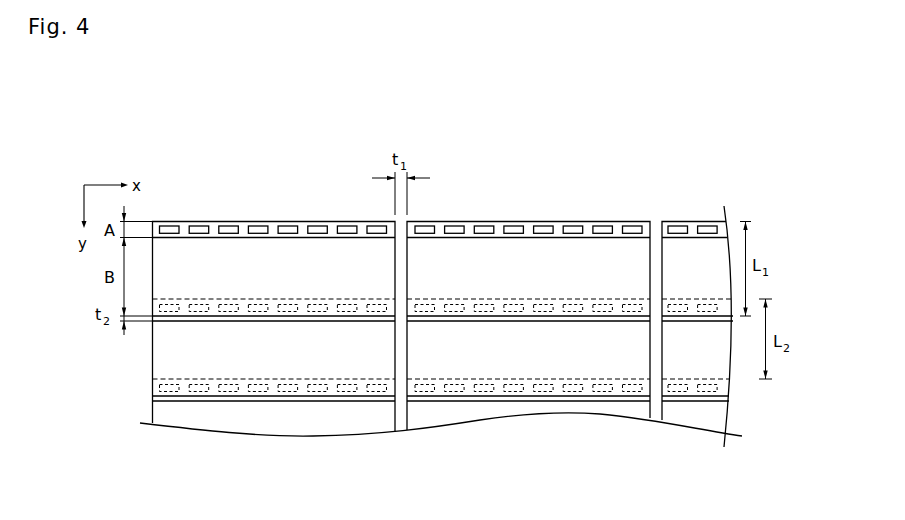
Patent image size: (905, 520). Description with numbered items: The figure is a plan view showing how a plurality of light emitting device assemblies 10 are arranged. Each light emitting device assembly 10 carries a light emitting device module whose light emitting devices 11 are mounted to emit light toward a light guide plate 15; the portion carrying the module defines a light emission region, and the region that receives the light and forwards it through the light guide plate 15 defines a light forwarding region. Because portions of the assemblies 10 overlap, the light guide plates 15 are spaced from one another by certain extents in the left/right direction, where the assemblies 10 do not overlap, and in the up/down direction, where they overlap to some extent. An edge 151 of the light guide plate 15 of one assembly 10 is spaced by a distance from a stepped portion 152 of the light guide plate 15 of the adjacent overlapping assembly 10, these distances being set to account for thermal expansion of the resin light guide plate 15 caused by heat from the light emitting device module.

The light emitting device assembly 10 is at (327, 256).
The light emitting device 11 is at (287, 228).
The light guide plate 15 is at (214, 252).
The edge 151 is at (675, 315).
The stepped portion 152 is at (710, 322).